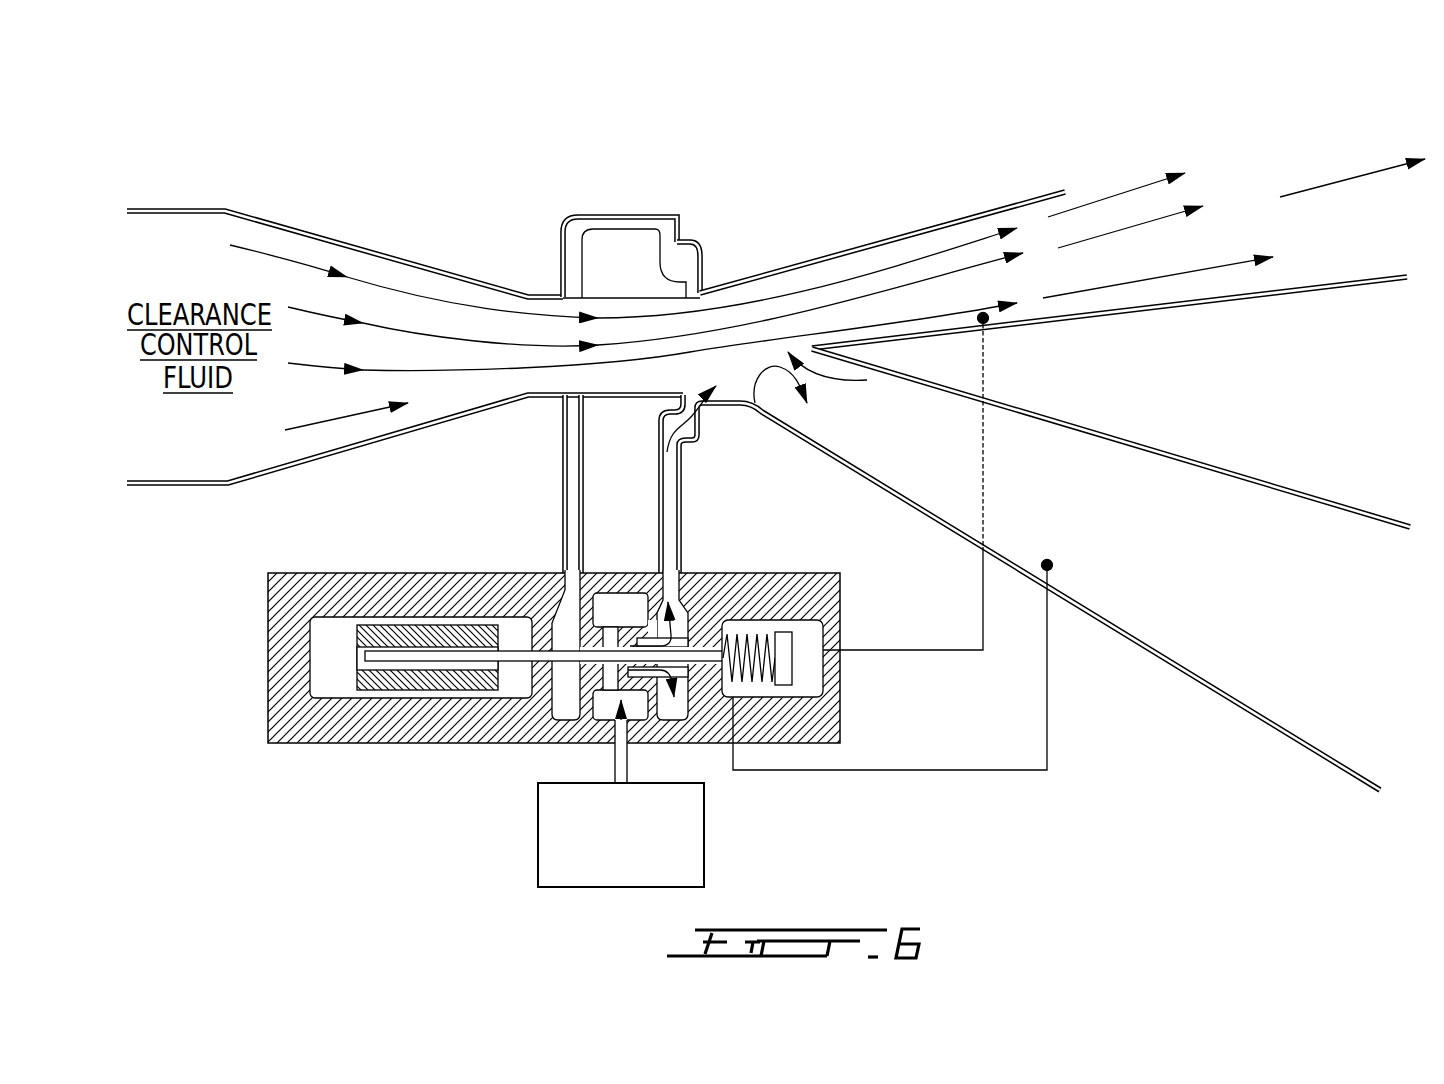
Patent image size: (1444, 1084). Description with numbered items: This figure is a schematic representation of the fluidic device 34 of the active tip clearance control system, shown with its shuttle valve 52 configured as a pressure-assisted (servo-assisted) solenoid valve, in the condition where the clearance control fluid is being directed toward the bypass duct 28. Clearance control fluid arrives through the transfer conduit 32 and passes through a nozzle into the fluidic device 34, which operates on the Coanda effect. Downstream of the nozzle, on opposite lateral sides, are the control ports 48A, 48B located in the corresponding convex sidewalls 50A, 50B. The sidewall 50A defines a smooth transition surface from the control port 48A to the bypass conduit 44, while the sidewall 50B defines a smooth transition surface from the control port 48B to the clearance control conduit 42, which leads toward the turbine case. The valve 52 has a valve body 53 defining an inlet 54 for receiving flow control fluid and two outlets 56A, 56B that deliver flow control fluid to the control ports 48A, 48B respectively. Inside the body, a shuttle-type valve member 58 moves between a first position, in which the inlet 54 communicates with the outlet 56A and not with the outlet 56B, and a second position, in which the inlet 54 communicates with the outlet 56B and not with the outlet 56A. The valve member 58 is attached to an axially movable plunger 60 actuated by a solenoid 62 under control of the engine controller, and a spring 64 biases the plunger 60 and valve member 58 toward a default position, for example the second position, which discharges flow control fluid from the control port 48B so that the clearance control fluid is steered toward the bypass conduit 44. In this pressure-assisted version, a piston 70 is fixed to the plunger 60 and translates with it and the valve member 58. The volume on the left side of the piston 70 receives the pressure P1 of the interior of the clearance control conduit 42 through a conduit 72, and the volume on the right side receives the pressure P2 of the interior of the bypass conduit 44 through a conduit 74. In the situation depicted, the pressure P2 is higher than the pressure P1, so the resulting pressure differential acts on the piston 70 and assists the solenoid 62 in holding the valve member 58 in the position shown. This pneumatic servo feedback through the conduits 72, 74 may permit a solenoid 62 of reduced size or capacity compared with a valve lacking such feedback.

The bypass duct 28 is at (1322, 163).
The transfer conduit 32 is at (190, 232).
The fluidic device 34 is at (627, 174).
The clearance control conduit 42 is at (1186, 492).
The bypass conduit 44 is at (932, 260).
The control port 48A is at (692, 297).
The control port 48B is at (660, 410).
The sidewall 50A is at (738, 292).
The sidewall 50B is at (748, 406).
The shuttle valve 52 is at (517, 656).
The valve body 53 is at (280, 610).
The inlet 54 is at (628, 756).
The outlet 56A is at (568, 578).
The outlet 56B is at (665, 585).
The valve member 58 is at (608, 692).
The plunger 60 is at (416, 660).
The solenoid 62 is at (374, 628).
The spring 64 is at (762, 622).
The piston 70 is at (790, 667).
The conduit 72 is at (1022, 772).
The conduit 74 is at (983, 604).
The pressure P1 is at (1061, 553).
The pressure P2 is at (991, 300).